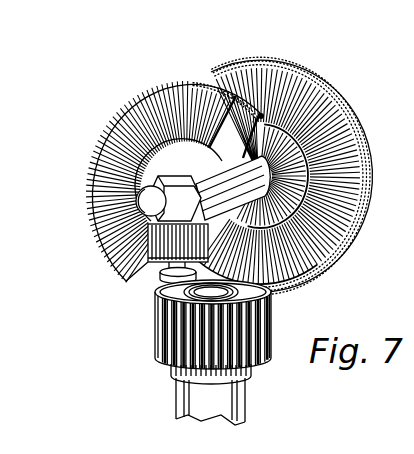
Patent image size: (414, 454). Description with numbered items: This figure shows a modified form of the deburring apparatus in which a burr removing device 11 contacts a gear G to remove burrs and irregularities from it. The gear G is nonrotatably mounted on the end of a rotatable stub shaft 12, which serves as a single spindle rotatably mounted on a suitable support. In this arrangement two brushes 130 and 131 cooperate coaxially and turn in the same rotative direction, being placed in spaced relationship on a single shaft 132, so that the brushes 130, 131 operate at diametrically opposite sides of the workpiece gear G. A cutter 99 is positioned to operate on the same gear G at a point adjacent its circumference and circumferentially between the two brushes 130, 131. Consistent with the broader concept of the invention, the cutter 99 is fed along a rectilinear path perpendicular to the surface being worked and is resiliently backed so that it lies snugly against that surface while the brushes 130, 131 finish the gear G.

The brush 130 is at (323, 73).
The brush 131 is at (106, 103).
The single shaft 132 is at (127, 206).
The burr removing device 11 is at (141, 257).
The cutter 99 is at (160, 273).
The gear G is at (263, 310).
The stub shaft 12 is at (228, 398).